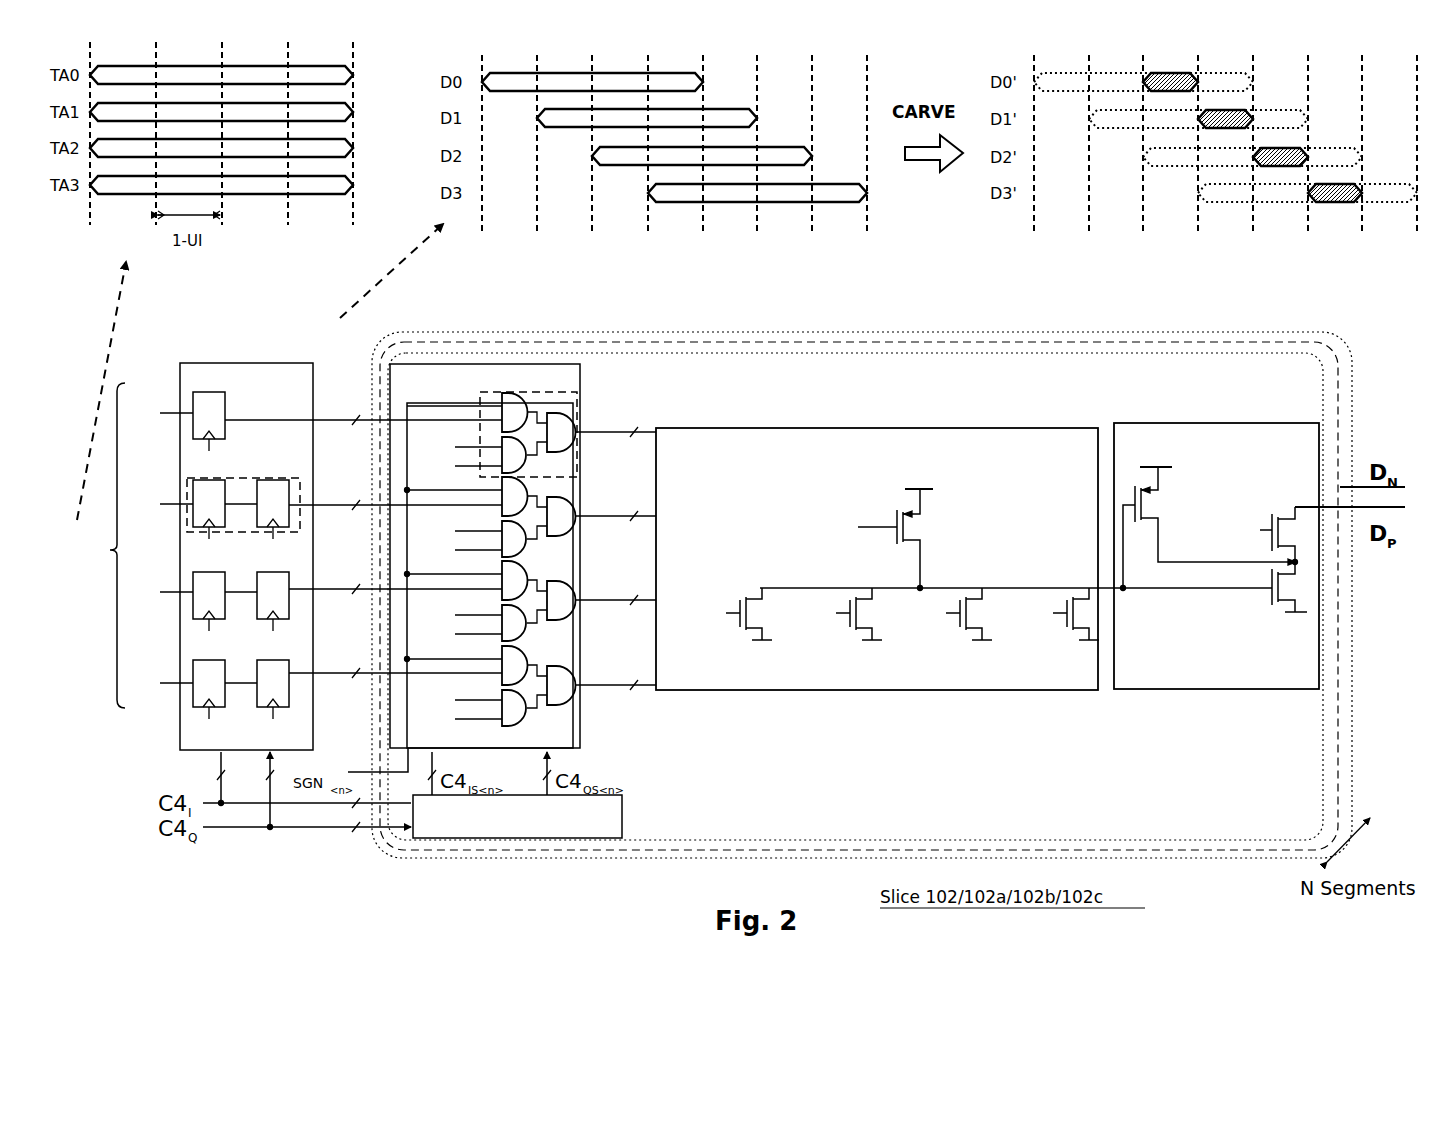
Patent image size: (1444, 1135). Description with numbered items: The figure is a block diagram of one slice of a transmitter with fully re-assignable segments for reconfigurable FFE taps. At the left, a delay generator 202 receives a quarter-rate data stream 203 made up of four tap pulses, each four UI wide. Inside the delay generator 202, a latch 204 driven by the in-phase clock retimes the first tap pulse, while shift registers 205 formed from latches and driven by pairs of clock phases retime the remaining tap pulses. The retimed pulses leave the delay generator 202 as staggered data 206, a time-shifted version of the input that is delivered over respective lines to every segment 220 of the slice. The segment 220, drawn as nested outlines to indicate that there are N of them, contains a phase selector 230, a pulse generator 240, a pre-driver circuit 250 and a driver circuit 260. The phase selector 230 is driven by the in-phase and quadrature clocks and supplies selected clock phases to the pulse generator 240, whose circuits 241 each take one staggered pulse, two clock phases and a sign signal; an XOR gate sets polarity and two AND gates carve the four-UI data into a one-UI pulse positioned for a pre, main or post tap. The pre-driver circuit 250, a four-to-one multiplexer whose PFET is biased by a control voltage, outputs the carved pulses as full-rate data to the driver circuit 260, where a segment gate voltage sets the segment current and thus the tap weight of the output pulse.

The delay generator 202 is at (236, 529).
The data stream 203 is at (108, 545).
The latch 204 is at (226, 404).
The shift register 205 is at (235, 478).
The staggered data 206 is at (362, 352).
The segment 220 is at (945, 333).
The phase selector 230 is at (535, 840).
The pulse generator 240 is at (523, 513).
The circuit 241 is at (578, 405).
The pre-driver circuit 250 is at (880, 692).
The driver circuit 260 is at (1203, 692).